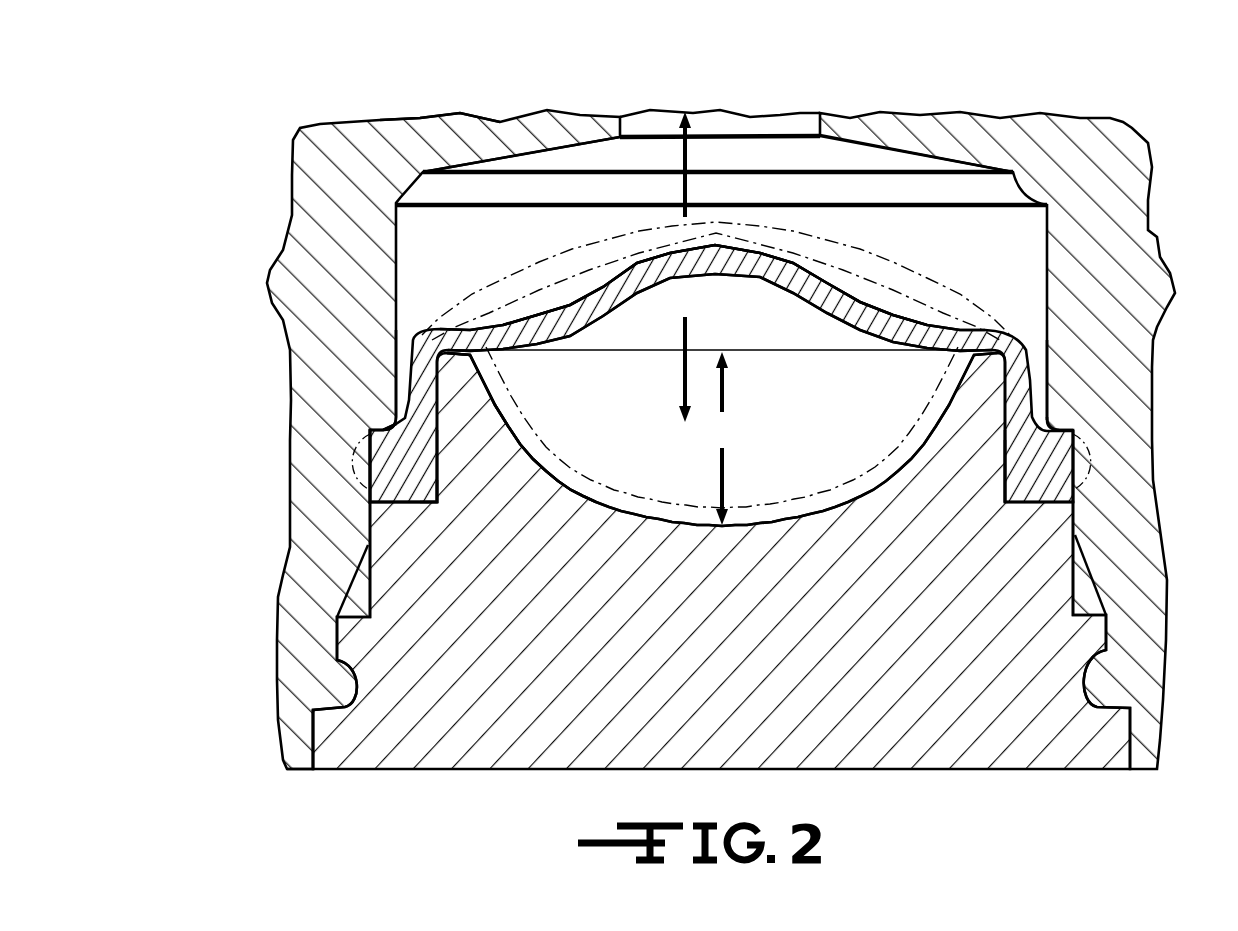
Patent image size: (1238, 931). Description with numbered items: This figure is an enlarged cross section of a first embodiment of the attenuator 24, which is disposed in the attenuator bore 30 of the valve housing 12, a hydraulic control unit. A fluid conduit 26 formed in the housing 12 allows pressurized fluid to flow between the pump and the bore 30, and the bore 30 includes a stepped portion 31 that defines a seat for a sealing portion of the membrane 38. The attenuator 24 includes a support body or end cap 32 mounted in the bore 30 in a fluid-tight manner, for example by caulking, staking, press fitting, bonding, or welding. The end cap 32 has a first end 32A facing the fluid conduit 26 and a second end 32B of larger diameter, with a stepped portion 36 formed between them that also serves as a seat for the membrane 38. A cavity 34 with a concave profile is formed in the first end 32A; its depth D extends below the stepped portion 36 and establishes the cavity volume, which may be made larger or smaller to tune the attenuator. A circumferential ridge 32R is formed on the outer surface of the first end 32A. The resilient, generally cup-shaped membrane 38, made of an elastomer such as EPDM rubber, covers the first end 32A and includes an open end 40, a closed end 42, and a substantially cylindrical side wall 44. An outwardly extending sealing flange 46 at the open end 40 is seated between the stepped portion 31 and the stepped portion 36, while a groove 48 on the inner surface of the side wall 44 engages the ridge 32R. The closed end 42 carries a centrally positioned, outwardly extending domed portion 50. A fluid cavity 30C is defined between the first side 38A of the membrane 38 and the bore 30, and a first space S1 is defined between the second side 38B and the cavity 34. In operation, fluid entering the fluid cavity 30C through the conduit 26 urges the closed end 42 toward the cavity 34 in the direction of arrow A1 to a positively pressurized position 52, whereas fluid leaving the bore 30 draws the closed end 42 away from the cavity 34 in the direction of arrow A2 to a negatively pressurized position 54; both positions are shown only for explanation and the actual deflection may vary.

The valve housing 12 is at (1130, 160).
The attenuator 24 is at (452, 78).
The fluid conduit 26 is at (794, 116).
The attenuator bore 30 is at (1017, 168).
The fluid cavity 30C is at (431, 232).
The stepped portion 31 is at (1060, 422).
The end cap 32 is at (1060, 784).
The first end 32A is at (435, 393).
The second end 32B is at (307, 738).
The ridge 32R is at (428, 464).
The cavity 34 is at (873, 482).
The stepped portion 36 is at (388, 503).
The membrane 38 is at (418, 322).
The first side 38A is at (815, 292).
The second side 38B is at (828, 310).
The open end 40 is at (432, 507).
The closed end 42 is at (567, 305).
The side wall 44 is at (1047, 367).
The sealing flange 46 is at (1087, 460).
The groove 48 is at (1000, 458).
The domed portion 50 is at (733, 245).
The positively pressurized membrane position 52 is at (662, 505).
The negatively pressurized membrane position 54 is at (890, 266).
The first space S1 is at (566, 427).
The arrow A1 is at (681, 374).
The arrow A2 is at (680, 150).
The depth D is at (722, 438).